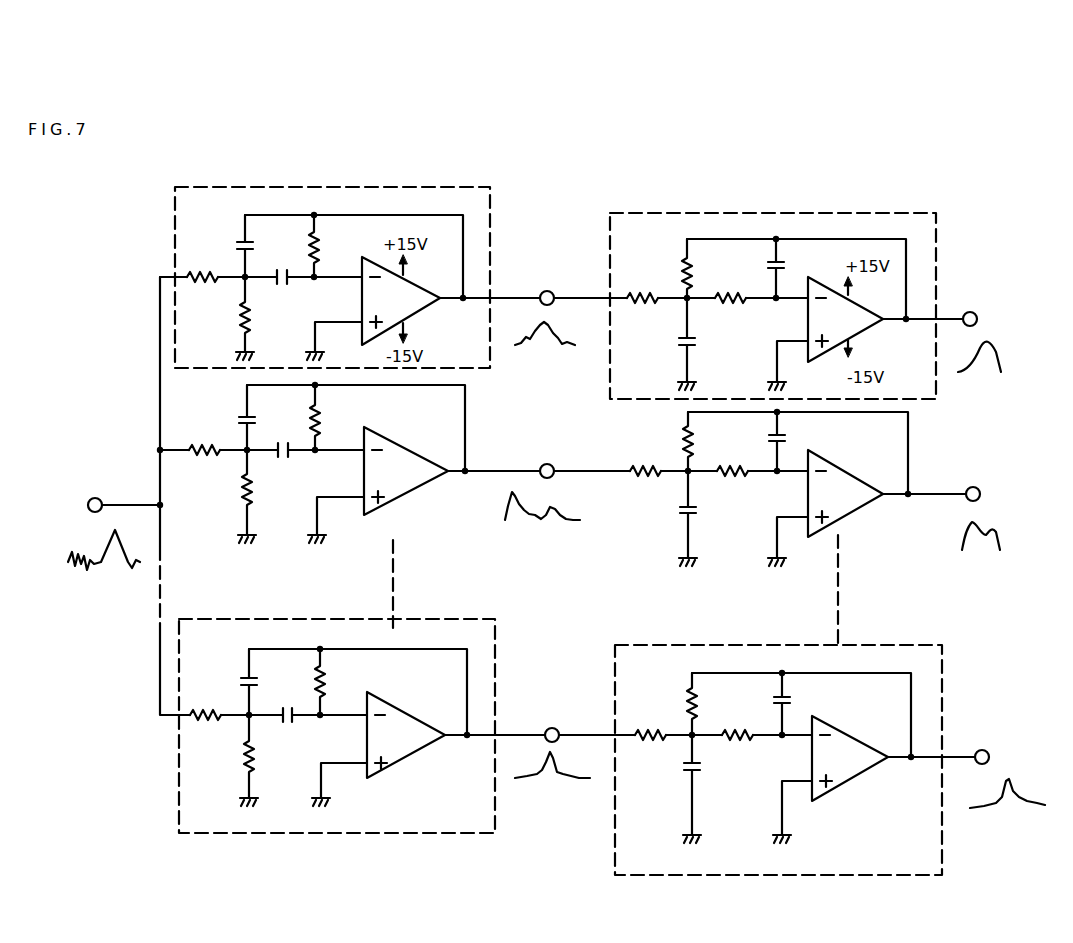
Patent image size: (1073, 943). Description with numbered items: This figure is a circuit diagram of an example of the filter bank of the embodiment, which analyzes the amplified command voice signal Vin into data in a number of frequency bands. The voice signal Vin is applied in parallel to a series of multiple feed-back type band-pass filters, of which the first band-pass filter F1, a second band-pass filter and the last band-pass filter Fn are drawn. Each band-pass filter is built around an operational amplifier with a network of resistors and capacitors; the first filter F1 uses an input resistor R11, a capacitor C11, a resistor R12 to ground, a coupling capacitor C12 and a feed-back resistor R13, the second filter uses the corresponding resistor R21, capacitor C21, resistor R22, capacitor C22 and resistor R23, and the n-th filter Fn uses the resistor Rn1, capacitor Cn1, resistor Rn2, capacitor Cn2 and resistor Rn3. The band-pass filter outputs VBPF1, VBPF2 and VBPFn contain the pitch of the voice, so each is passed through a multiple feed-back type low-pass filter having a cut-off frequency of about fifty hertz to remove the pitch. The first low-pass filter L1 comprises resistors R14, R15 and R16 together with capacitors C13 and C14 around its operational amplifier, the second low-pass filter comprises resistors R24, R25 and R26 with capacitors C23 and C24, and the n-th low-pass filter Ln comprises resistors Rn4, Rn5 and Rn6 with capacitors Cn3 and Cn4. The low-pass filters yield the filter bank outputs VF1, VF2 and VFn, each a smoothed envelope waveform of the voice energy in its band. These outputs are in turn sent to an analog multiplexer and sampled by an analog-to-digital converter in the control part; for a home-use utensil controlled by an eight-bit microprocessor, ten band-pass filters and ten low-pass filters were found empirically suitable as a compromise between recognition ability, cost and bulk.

The command voice signal Vin is at (115, 516).
The band-pass filter F1 is at (405, 187).
The resistor R11 is at (207, 288).
The capacitor C11 is at (238, 246).
The resistor R12 is at (250, 322).
The capacitor C12 is at (286, 284).
The resistor R13 is at (320, 246).
The band-pass filter output signal VBPF1 is at (571, 294).
The low-pass filter L1 is at (775, 212).
The resistor R14 is at (638, 306).
The resistor R15 is at (683, 272).
The capacitor C13 is at (696, 341).
The resistor R16 is at (741, 306).
The capacitor C14 is at (784, 266).
The filter bank output signal VF1 is at (979, 322).
The resistor R21 is at (205, 462).
The capacitor C21 is at (238, 418).
The resistor R22 is at (253, 489).
The capacitor C22 is at (288, 459).
The resistor R23 is at (320, 419).
The band-pass filter output signal VBPF2 is at (567, 471).
The resistor R24 is at (645, 479).
The resistor R25 is at (683, 437).
The capacitor C23 is at (698, 508).
The resistor R26 is at (727, 467).
The capacitor C24 is at (784, 438).
The filter bank output signal VF2 is at (974, 499).
The band-pass filter Fn is at (447, 618).
The resistor Rn1 is at (208, 724).
The capacitor Cn1 is at (240, 681).
The resistor Rn2 is at (254, 755).
The capacitor Cn2 is at (288, 722).
The resistor Rn3 is at (327, 687).
The band-pass filter output signal VBPFn is at (575, 728).
The low-pass filter Ln is at (851, 645).
The resistor Rn4 is at (650, 742).
The resistor Rn5 is at (686, 705).
The capacitor Cn3 is at (700, 764).
The resistor Rn6 is at (727, 730).
The capacitor Cn4 is at (790, 700).
The filter bank output signal VFn is at (1005, 758).